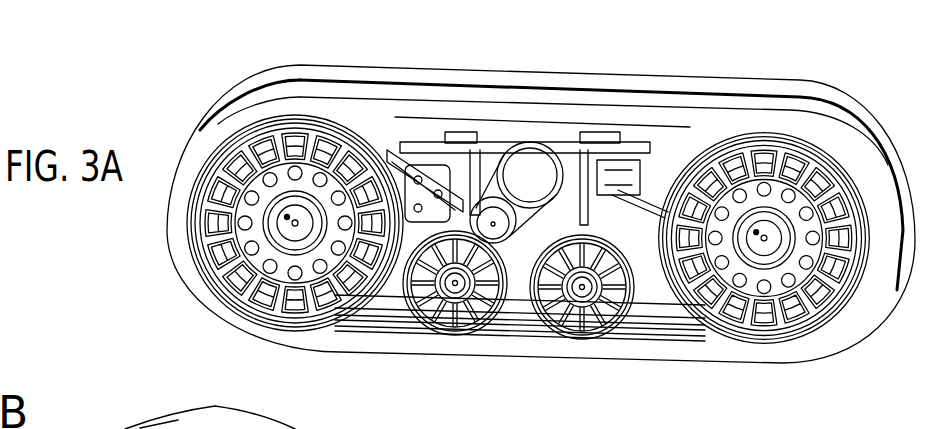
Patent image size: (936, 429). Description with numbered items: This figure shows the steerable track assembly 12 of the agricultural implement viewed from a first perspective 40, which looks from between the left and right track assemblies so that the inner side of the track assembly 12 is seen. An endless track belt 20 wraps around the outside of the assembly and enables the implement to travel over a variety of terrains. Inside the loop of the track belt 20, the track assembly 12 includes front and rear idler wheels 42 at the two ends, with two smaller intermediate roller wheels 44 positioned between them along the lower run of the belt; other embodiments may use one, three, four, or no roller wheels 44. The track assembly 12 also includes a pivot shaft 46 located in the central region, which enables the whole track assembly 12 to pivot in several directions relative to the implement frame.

The track assembly 12 is at (860, 348).
The track belt 20 is at (445, 95).
The first perspective 40 is at (680, 65).
The idler wheels 42 is at (223, 157).
The roller wheels 44 is at (586, 290).
The pivot shaft 46 is at (420, 282).